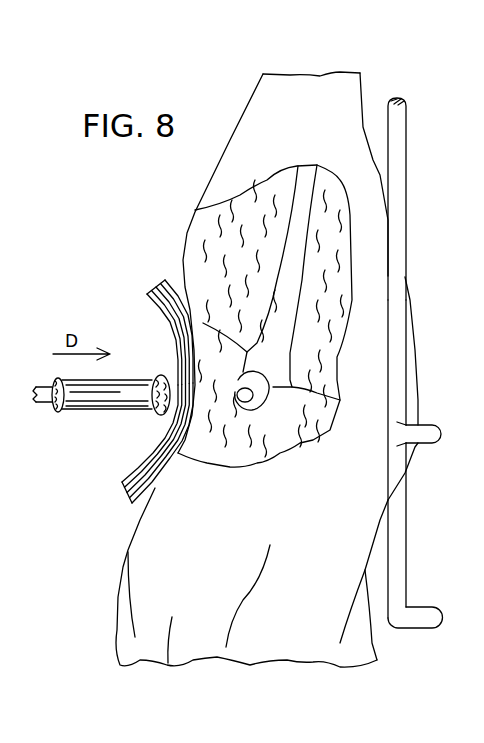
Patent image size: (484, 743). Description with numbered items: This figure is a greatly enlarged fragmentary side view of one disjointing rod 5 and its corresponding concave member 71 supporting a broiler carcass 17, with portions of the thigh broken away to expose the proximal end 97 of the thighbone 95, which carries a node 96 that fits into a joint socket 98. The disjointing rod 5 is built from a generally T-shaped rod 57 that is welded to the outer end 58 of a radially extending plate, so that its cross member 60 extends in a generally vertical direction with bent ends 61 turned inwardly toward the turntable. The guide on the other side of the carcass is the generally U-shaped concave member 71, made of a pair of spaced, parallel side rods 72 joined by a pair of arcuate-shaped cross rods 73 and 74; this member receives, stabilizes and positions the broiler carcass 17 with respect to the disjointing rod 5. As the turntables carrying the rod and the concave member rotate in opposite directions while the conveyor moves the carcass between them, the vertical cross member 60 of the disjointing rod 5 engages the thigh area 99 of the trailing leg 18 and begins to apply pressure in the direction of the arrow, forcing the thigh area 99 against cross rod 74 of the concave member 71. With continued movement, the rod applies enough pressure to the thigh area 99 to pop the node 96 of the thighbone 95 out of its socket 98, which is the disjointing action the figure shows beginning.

The disjointing rod 5 is at (98, 428).
The broiler carcass 17 is at (168, 663).
The trailing leg 18 is at (300, 113).
The T-shaped rod 57 is at (130, 395).
The outer end 58 is at (43, 395).
The cross member 60 is at (170, 435).
The bent ends 61 is at (157, 285).
The concave member 71 is at (396, 182).
The side rods 72 is at (396, 270).
The cross rod 73 is at (423, 615).
The cross rod 74 is at (428, 443).
The thighbone 95 is at (300, 247).
The node 96 is at (258, 392).
The proximal end 97 is at (267, 367).
The joint socket 98 is at (235, 402).
The thigh area 99 is at (233, 283).